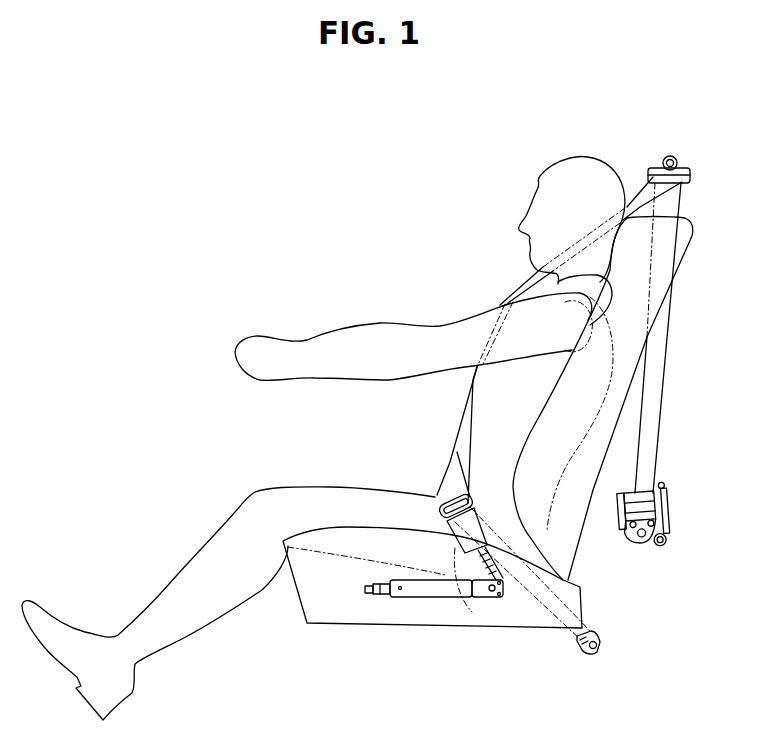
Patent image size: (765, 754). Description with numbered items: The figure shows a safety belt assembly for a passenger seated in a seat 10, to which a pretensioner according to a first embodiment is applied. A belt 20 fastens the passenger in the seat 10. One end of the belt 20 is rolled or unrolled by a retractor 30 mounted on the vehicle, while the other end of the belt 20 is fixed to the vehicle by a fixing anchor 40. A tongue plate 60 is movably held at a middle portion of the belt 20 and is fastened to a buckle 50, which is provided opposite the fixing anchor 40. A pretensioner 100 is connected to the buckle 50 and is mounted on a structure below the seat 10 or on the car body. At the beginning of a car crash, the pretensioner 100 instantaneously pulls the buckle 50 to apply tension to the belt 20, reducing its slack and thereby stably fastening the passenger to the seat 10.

The seat 10 is at (565, 555).
The belt 20 is at (463, 432).
The retractor 30 is at (646, 496).
The fixing anchor 40 is at (600, 643).
The buckle 50 is at (468, 600).
The tongue plate 60 is at (447, 470).
The pretensioner 100 is at (427, 597).